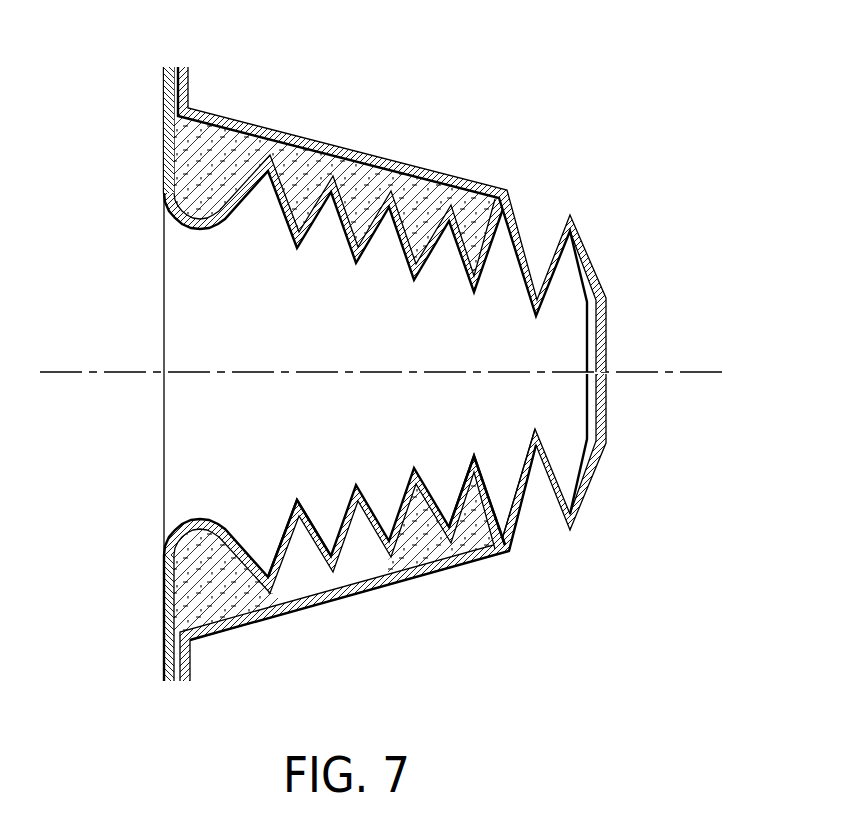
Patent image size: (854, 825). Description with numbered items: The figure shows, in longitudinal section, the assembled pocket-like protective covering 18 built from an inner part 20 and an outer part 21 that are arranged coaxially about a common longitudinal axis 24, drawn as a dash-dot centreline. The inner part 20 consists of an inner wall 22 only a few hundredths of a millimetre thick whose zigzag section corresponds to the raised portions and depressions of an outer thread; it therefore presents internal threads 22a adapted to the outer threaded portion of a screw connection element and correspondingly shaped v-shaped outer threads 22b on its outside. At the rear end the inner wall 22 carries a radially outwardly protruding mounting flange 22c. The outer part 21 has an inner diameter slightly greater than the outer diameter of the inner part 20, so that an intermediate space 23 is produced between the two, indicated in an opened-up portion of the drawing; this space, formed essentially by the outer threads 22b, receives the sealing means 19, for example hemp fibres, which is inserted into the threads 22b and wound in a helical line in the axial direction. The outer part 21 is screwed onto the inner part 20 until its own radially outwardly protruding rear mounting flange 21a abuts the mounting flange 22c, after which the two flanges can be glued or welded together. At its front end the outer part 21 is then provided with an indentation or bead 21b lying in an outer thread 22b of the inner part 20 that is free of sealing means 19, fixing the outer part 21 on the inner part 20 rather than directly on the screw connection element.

The protective covering 18 is at (371, 359).
The sealing means 19 is at (219, 160).
The inner part 20 is at (430, 175).
The outer part 21 is at (406, 540).
The mounting flange 21a is at (187, 84).
The indentation or bead 21b is at (514, 553).
The inner wall 22 is at (423, 547).
The threads 22a is at (500, 456).
The threads 22b is at (303, 557).
The mounting flange 22c is at (172, 124).
The intermediate space 23 is at (350, 558).
The longitudinal axis 24 is at (97, 376).